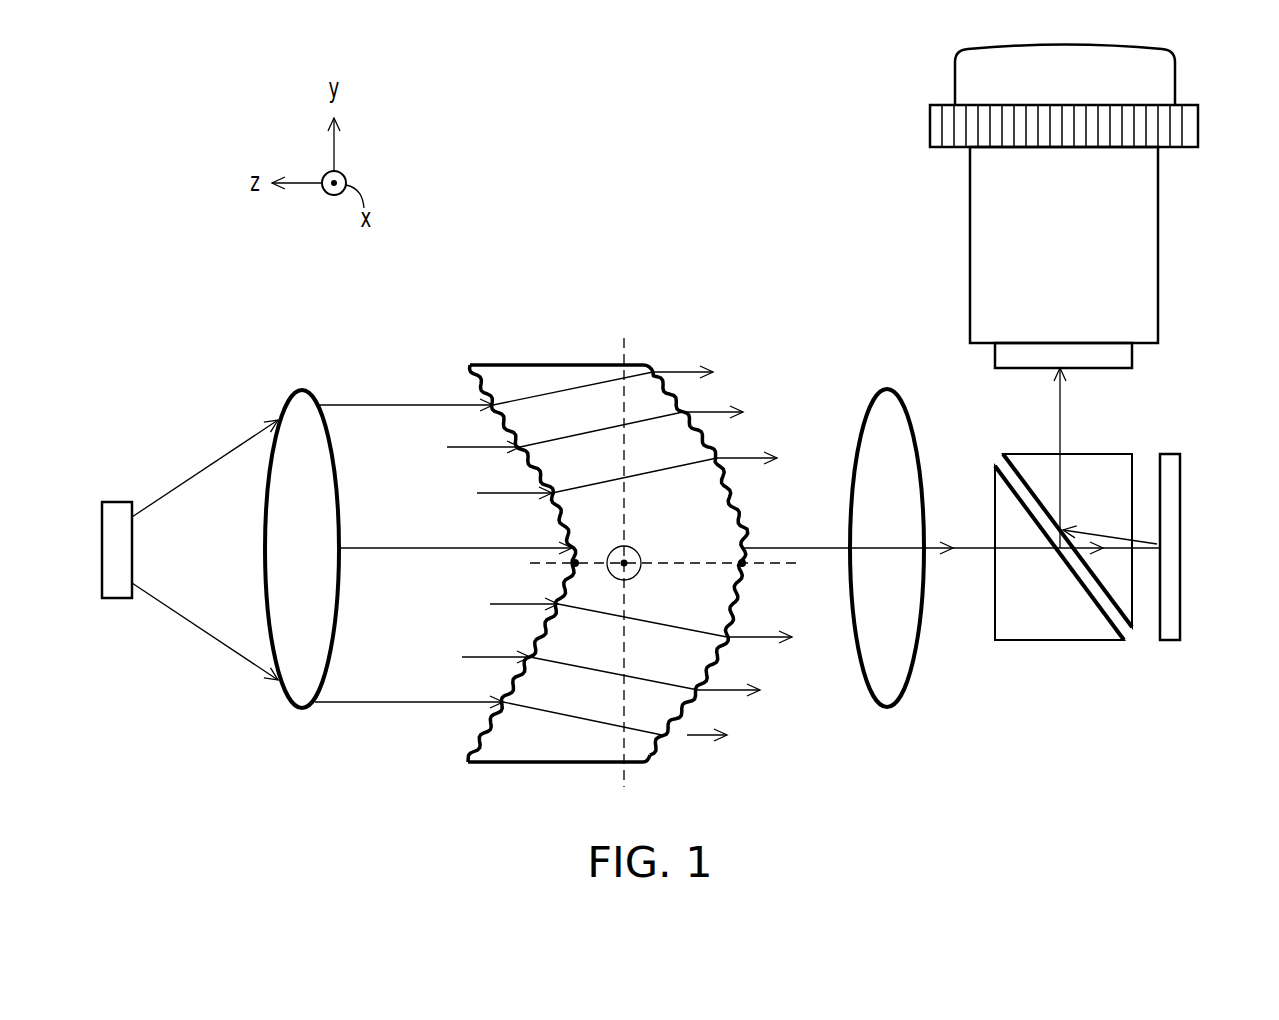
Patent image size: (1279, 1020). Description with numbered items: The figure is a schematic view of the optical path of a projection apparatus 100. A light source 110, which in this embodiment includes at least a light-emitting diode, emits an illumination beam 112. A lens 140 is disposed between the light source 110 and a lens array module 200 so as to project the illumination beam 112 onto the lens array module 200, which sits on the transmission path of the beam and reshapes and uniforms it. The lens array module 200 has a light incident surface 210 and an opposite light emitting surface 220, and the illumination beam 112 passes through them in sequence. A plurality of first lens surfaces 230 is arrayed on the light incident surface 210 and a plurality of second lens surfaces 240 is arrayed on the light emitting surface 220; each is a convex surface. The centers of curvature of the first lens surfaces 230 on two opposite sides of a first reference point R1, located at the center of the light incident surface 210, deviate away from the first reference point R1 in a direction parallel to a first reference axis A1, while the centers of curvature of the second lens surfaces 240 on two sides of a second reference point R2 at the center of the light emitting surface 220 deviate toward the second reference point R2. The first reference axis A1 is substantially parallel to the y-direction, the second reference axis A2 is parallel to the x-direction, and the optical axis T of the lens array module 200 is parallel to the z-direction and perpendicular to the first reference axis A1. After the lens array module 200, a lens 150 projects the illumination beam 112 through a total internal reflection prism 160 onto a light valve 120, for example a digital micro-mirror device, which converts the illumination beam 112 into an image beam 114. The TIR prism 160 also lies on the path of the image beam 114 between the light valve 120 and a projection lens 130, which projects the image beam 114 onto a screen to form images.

The projection apparatus 100 is at (1257, 782).
The light source 110 is at (115, 512).
The illumination beam 112 is at (197, 473).
The image beam 114 is at (1070, 530).
The light valve 120 is at (1172, 524).
The projection lens 130 is at (1123, 230).
The lens 140 is at (303, 413).
The lens 150 is at (882, 425).
The total internal reflection prism 160 is at (1060, 652).
The lens array module 200 is at (601, 540).
The light incident surface 210 is at (476, 384).
The light emitting surface 220 is at (666, 385).
The first lens surfaces 230 is at (496, 414).
The second lens surfaces 240 is at (722, 658).
The first reference axis A1 is at (624, 785).
The second reference axis A2 is at (650, 560).
The first reference point R1 is at (572, 566).
The second reference point R2 is at (745, 566).
The optical axis T is at (530, 563).